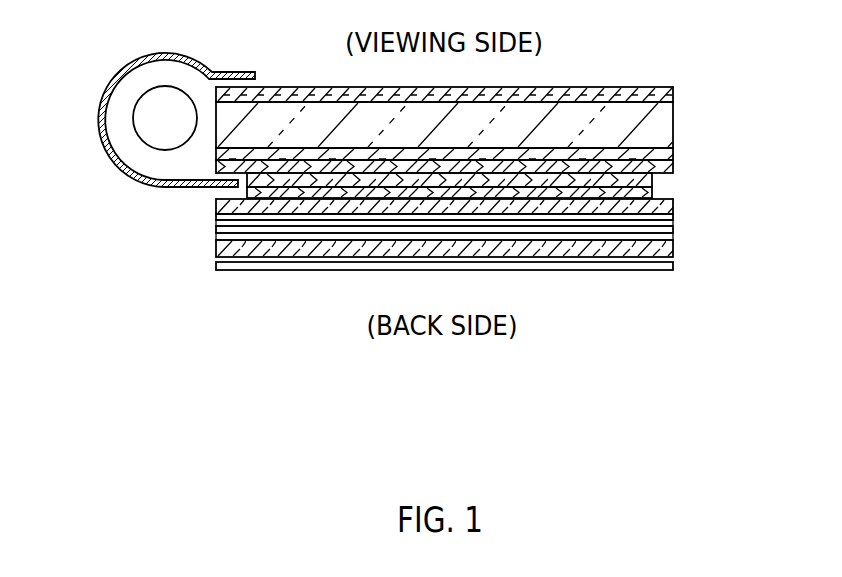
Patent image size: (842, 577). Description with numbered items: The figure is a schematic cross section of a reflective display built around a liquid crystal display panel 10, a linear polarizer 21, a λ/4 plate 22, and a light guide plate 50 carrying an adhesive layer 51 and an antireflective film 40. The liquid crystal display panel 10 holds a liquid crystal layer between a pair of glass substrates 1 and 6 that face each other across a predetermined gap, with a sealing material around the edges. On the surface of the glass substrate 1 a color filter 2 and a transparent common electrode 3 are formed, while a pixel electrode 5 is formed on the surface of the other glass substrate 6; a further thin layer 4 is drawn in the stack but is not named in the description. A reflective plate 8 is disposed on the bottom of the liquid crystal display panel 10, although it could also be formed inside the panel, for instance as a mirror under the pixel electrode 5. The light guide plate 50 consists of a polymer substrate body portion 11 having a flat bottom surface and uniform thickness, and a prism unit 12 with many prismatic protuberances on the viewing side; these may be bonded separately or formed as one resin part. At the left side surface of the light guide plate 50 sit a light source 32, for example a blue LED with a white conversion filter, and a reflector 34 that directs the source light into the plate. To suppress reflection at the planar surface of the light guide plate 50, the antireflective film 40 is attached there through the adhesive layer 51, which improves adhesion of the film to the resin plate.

The glass substrate 1 is at (216, 205).
The color filter 2 is at (216, 219).
The transparent electrode 3 is at (216, 225).
The diffusion sheet 4 is at (216, 231).
The pixel electrode 5 is at (216, 237).
The glass substrate 6 is at (414, 319).
The reflective plate 8 is at (673, 267).
The liquid crystal display panel 10 is at (376, 296).
The polymer substrate body portion 11 is at (469, 113).
The prism unit 12 is at (673, 88).
The linear polarizer 21 is at (652, 180).
The λ/4 plate 22 is at (647, 192).
The light source 32 is at (152, 98).
The reflector 34 is at (164, 54).
The antireflective film 40 is at (668, 168).
The light guide plate 50 is at (500, 90).
The adhesive layer 51 is at (662, 156).